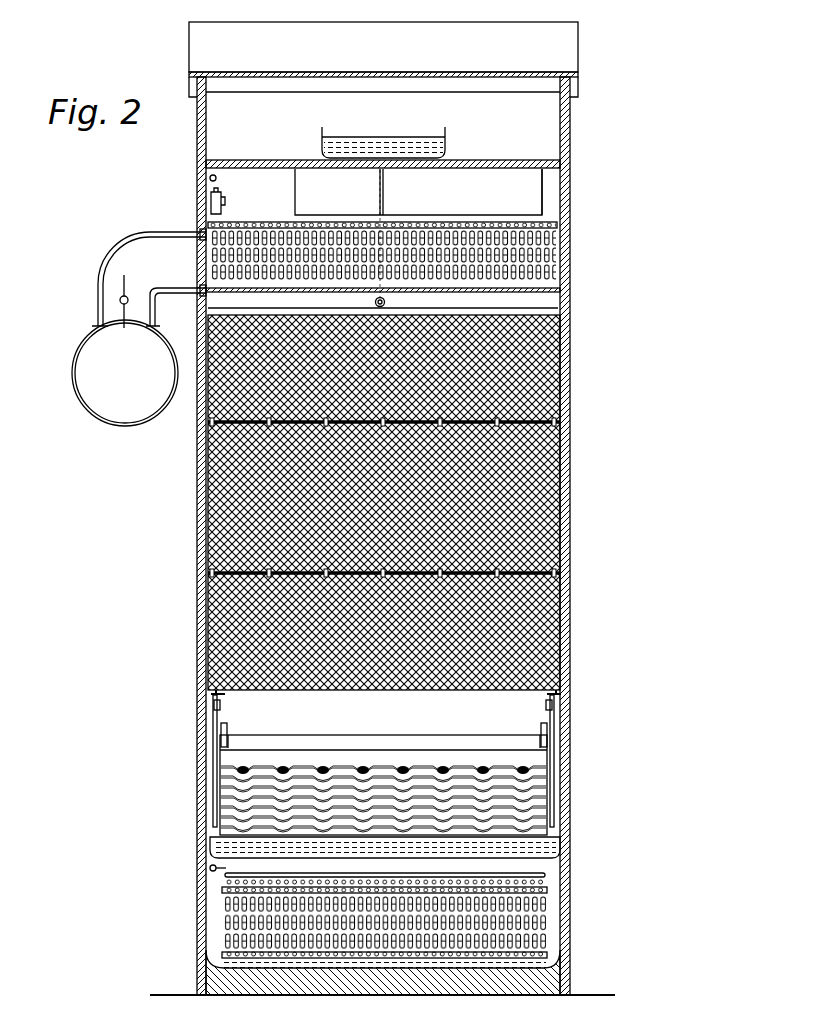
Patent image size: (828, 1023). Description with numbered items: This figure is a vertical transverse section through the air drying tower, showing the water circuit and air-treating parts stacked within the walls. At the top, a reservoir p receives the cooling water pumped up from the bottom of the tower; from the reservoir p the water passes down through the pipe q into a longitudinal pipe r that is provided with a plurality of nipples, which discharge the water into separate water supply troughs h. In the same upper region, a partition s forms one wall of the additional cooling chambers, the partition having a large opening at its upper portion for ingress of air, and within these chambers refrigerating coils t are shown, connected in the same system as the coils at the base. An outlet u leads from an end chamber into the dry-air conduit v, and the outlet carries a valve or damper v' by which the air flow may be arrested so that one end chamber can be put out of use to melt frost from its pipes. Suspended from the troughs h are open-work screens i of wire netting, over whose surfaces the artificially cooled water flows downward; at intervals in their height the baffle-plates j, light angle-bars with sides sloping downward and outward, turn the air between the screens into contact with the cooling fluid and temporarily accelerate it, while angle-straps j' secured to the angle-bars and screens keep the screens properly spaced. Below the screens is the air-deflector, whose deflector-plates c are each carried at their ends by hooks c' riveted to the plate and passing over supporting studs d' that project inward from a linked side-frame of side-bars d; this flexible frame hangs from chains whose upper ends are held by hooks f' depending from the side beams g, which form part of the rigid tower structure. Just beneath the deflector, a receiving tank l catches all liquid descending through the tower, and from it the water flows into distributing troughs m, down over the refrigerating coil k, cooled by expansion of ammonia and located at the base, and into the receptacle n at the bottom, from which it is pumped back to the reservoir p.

The reservoir p is at (396, 135).
The pipe q is at (385, 193).
The partition s is at (552, 197).
The refrigerating coil t is at (553, 240).
The longitudinal pipe r is at (385, 303).
The water supply trough h is at (530, 308).
The open-work screen i is at (562, 484).
The baffle-plate j is at (381, 479).
The angle-strap j' is at (381, 515).
The outlet u is at (150, 232).
The dry-air conduit v is at (110, 373).
The valve v' is at (136, 298).
The deflector-plate c is at (383, 769).
The hook c' is at (384, 729).
The side-bar d is at (386, 761).
The supporting stud d' is at (384, 723).
The hook f' is at (383, 702).
The side beam g is at (213, 697).
The receiving tank l is at (562, 847).
The distributing trough m is at (548, 880).
The refrigerating coil k is at (548, 902).
The receptacle n is at (437, 966).